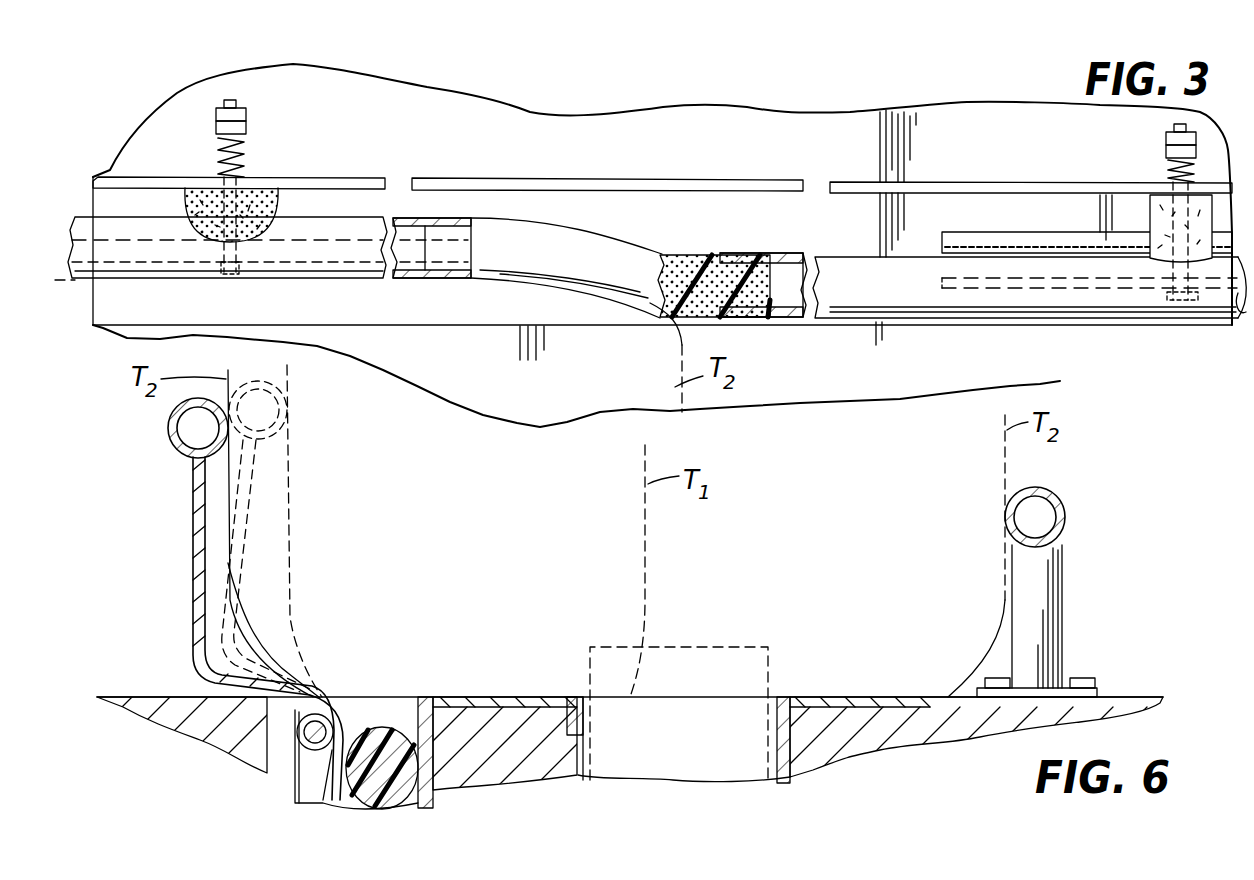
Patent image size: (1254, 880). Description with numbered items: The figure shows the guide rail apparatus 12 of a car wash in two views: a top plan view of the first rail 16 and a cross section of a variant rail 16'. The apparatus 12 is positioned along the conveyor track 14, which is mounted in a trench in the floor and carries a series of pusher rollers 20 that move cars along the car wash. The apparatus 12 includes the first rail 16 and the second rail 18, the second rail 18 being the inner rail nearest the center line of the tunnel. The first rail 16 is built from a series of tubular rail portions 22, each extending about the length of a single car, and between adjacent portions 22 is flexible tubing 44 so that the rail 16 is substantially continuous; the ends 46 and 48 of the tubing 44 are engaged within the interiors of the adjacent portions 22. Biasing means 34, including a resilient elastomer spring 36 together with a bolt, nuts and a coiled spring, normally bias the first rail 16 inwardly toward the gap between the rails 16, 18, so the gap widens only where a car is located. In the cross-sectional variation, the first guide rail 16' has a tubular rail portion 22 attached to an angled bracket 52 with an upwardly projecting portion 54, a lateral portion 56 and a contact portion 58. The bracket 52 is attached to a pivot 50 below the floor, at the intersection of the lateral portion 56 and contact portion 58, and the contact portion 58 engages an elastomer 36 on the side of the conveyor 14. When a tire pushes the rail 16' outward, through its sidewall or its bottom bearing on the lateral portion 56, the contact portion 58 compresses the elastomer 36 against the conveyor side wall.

In FIG. 3, the guide rail apparatus 12 is at (913, 83).
In FIG. 6, the guide rail apparatus 12 is at (1152, 481).
In FIG. 6, the conveyor track 14 is at (784, 678).
In FIG. 3, the first rail 16 is at (662, 258).
In FIG. 6, the first guide rail 16' is at (167, 434).
In FIG. 6, the second rail 18 is at (1064, 511).
In FIG. 6, the pusher roller 20 is at (718, 653).
In FIG. 3, the tubular rail portion 22 is at (350, 266).
In FIG. 3, the biasing means 34 is at (264, 140).
In FIG. 6, the resilient elastomer spring 36 is at (380, 742).
In FIG. 3, the flexible tubing 44 is at (620, 252).
In FIG. 3, the end of tubing 46 is at (745, 300).
In FIG. 3, the end of tubing 48 is at (452, 268).
In FIG. 6, the pivot 50 is at (307, 755).
In FIG. 6, the angled bracket 52 is at (222, 628).
In FIG. 6, the upwardly projecting portion 54 is at (195, 522).
In FIG. 6, the lateral portion 56 is at (195, 662).
In FIG. 6, the contact portion 58 is at (332, 708).